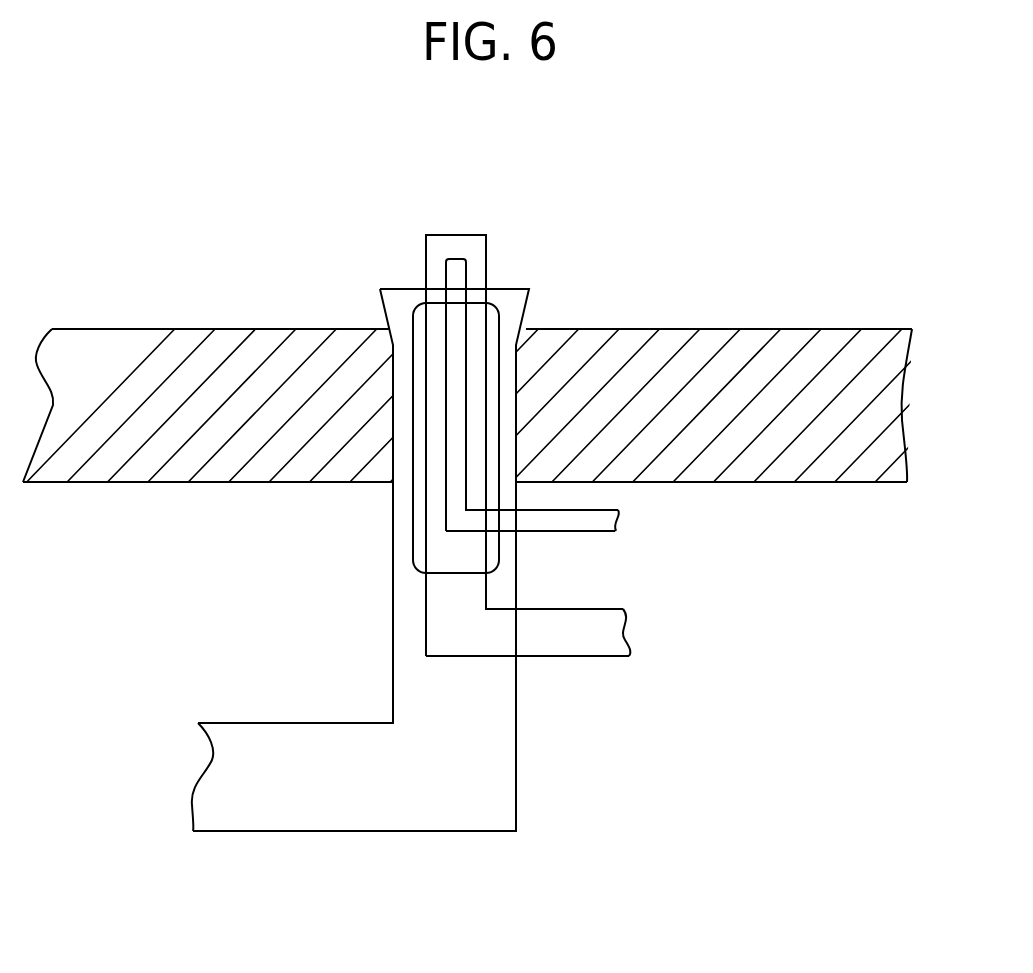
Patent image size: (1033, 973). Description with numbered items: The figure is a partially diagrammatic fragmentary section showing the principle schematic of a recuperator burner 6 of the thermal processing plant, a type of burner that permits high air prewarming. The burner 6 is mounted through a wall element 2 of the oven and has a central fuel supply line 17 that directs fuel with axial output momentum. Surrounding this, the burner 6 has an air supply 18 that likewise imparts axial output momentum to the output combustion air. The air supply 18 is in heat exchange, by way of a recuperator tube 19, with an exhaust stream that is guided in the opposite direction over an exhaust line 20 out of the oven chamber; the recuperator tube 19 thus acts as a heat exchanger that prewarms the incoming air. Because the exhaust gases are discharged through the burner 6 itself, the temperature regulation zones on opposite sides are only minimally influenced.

The panel / plate 2 is at (704, 345).
The recuperator burner 6 is at (582, 195).
The central fuel supply line 17 is at (600, 522).
The air supply 18 is at (592, 635).
The recuperator tube 19 is at (485, 340).
The exhaust line 20 is at (476, 754).